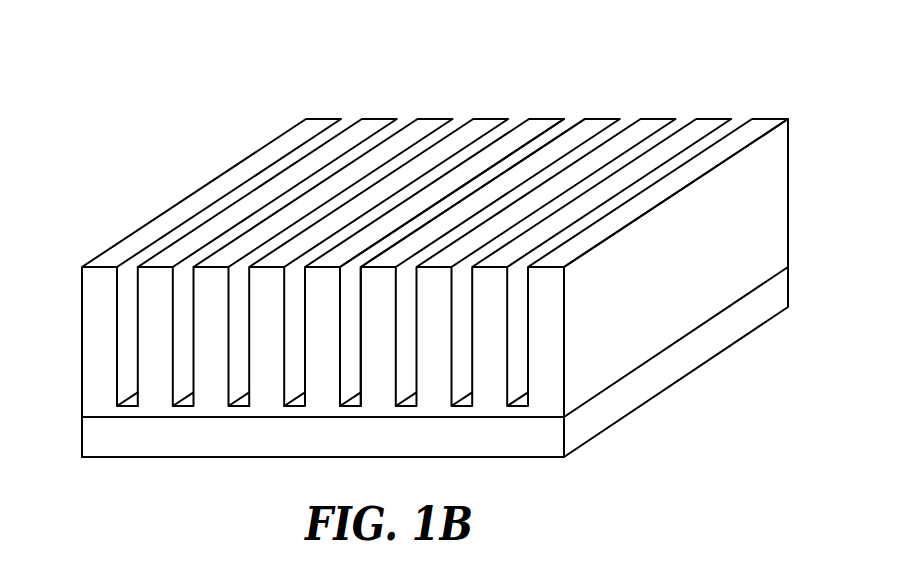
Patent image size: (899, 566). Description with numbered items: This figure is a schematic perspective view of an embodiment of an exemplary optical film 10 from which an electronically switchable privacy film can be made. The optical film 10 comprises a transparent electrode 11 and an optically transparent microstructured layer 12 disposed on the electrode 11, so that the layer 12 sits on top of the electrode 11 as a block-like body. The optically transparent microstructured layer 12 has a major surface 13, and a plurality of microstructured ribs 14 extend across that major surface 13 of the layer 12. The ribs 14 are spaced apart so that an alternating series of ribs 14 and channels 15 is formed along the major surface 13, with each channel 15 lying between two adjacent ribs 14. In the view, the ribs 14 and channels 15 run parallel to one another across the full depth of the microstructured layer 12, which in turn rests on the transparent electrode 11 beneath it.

The optical film 10 is at (436, 238).
The transparent electrode 11 is at (778, 290).
The optically transparent microstructured layer 12 is at (399, 249).
The major surface 13 is at (373, 123).
The microstructured ribs 14 is at (500, 118).
The channels 15 is at (574, 118).